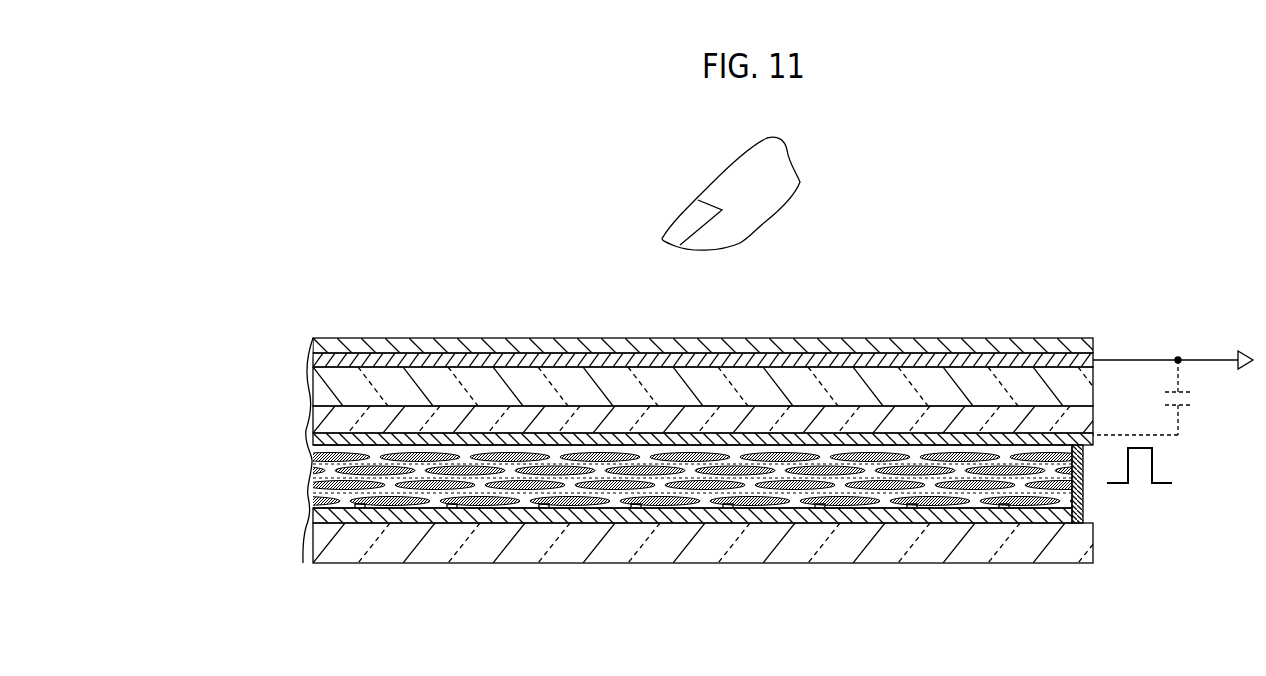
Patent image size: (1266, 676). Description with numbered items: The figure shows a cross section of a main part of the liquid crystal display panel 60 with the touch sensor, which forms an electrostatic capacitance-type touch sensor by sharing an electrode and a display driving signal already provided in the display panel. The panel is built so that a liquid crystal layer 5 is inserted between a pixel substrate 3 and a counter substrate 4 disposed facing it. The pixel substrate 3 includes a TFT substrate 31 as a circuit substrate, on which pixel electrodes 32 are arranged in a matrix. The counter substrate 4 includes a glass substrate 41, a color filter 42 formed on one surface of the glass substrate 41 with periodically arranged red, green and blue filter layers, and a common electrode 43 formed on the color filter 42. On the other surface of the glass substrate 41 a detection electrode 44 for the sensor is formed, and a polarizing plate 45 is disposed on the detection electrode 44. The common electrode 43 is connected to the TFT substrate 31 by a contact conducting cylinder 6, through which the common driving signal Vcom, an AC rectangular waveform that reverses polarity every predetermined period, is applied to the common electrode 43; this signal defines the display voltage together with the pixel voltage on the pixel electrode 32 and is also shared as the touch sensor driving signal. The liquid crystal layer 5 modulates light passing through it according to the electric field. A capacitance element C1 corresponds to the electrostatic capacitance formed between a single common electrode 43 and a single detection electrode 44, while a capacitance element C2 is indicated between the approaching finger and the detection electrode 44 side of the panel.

The liquid crystal display panel with the touch sensor 60 is at (898, 247).
The counter substrate 4 is at (241, 290).
The polarizing plate 45 is at (313, 345).
The detection electrode for the sensor 44 is at (313, 360).
The glass substrate 41 is at (315, 384).
The color filter 42 is at (313, 418).
The common electrode 43 is at (310, 438).
The liquid crystal layer 5 is at (290, 487).
The contact conducting cylinder 6 is at (1082, 486).
The pixel substrate 3 is at (250, 505).
The pixel electrode 32 is at (310, 511).
The TFT substrate 31 is at (320, 548).
The capacitance element C2 is at (708, 328).
The capacitance element C1 is at (1192, 391).
The common driving signal Vcom is at (1167, 487).